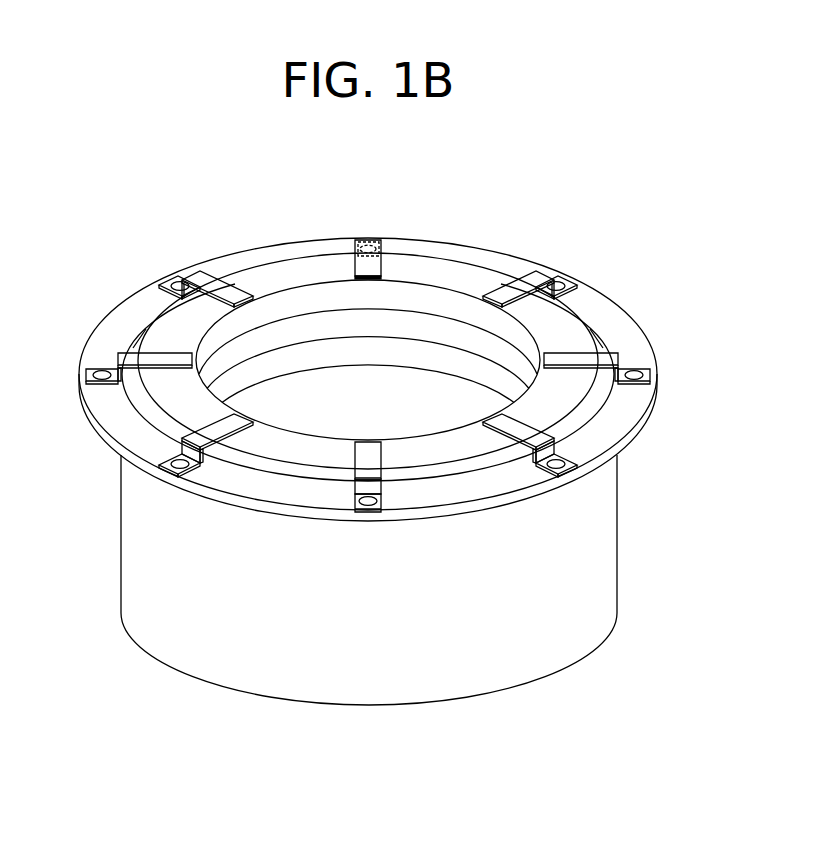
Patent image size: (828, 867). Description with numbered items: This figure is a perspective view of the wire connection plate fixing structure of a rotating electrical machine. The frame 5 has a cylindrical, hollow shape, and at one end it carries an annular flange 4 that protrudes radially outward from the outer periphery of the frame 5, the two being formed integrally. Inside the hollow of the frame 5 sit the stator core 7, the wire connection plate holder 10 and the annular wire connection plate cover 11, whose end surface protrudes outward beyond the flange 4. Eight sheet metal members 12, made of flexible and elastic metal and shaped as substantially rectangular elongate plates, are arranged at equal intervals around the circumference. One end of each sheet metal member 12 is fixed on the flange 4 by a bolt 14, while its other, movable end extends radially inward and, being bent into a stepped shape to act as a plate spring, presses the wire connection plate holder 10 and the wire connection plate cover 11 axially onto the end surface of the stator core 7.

The flange 4 is at (140, 296).
The frame 5 is at (622, 545).
The stator core 7 is at (315, 365).
The wire connection plate holder 10 is at (452, 342).
The wire connection plate cover 11 is at (593, 405).
The sheet metal member 12 is at (606, 350).
The bolt 14 is at (380, 238).